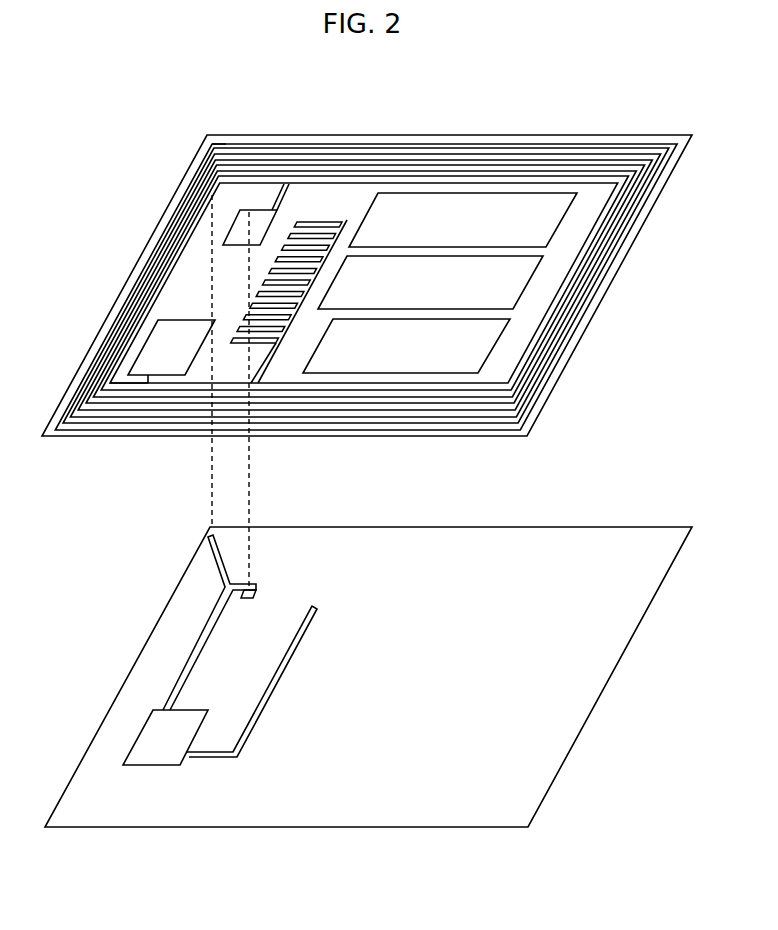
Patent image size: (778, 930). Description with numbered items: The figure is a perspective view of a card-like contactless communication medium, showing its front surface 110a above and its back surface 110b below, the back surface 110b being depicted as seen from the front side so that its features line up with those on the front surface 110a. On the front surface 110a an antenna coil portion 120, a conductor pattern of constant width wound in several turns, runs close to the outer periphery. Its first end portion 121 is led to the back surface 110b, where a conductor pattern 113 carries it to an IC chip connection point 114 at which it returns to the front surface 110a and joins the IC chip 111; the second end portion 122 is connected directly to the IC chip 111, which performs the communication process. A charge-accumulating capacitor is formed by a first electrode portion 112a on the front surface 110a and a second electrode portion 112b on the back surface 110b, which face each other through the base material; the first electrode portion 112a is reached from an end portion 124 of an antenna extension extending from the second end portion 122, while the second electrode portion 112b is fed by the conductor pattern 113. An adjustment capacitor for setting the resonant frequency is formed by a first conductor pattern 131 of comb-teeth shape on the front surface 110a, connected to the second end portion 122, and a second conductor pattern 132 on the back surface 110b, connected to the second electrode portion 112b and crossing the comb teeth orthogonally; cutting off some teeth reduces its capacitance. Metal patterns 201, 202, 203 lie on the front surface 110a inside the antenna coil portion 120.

The front surface 110a is at (380, 437).
The back surface 110b is at (374, 828).
The antenna coil portion 120 is at (471, 143).
The first end portion 121 is at (214, 146).
The second end portion 122 is at (291, 183).
The end portion of antenna extension portion 124 is at (150, 379).
The IC chip 111 is at (240, 226).
The first electrode portion 112a is at (150, 356).
The second electrode portion 112b is at (160, 766).
The conductor pattern 113 is at (193, 650).
The IC chip connection point 114 is at (247, 600).
The first conductor pattern 131 is at (324, 221).
The second conductor pattern 132 is at (283, 672).
The metal pattern 201 is at (560, 212).
The metal pattern 202 is at (518, 283).
The metal pattern 203 is at (478, 348).